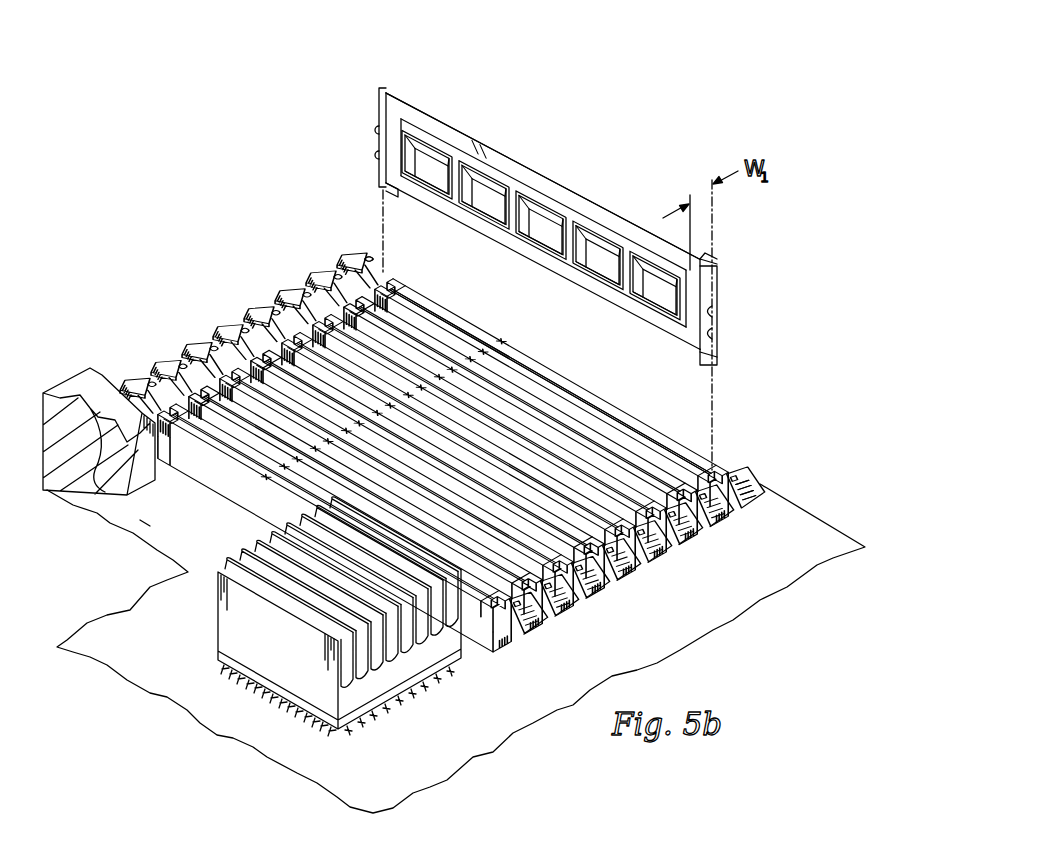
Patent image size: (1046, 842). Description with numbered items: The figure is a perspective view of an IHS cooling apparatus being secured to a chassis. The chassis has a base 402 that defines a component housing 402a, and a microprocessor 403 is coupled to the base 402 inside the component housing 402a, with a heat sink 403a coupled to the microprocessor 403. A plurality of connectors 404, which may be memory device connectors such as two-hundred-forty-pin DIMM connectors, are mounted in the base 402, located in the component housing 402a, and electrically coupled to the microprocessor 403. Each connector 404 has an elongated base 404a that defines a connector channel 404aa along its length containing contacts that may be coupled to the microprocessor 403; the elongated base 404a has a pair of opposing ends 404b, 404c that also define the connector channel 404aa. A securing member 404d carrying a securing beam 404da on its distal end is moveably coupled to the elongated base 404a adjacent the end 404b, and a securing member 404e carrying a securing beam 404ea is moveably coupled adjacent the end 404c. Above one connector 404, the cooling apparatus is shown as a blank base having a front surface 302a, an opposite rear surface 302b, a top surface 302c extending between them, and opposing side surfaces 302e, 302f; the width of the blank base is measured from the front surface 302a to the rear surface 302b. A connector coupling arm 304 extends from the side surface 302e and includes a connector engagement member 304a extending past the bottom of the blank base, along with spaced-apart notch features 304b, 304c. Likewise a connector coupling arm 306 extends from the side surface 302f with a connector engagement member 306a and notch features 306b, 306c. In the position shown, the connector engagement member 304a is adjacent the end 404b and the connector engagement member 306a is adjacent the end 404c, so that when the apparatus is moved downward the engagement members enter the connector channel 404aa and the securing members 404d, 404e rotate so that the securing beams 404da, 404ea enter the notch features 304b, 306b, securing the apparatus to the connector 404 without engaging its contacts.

The front surface 302a is at (543, 258).
The rear surface 302b is at (543, 185).
The top surface 302c is at (584, 191).
The side surface 302e is at (543, 176).
The side surface 302f is at (712, 270).
The connector coupling arm 304 is at (369, 155).
The connector engagement member 304a is at (396, 194).
The notch feature 304b is at (379, 129).
The notch feature 304c is at (379, 156).
The connector coupling arm 306 is at (716, 329).
The connector engagement member 306a is at (694, 360).
The notch feature 306b is at (724, 314).
The notch feature 306c is at (724, 337).
The base 402 is at (463, 600).
The component housing 402a is at (768, 412).
The microprocessor 403 is at (334, 642).
The heat sink 403a is at (248, 566).
The connector 404 is at (457, 415).
The elongated base 404a is at (553, 402).
The connector channel 404aa is at (550, 382).
The end 404b is at (387, 297).
The end 404c is at (713, 486).
The securing member 404d is at (363, 268).
The securing beam 404da is at (350, 256).
The securing member 404e is at (743, 486).
The securing beam 404ea is at (745, 490).